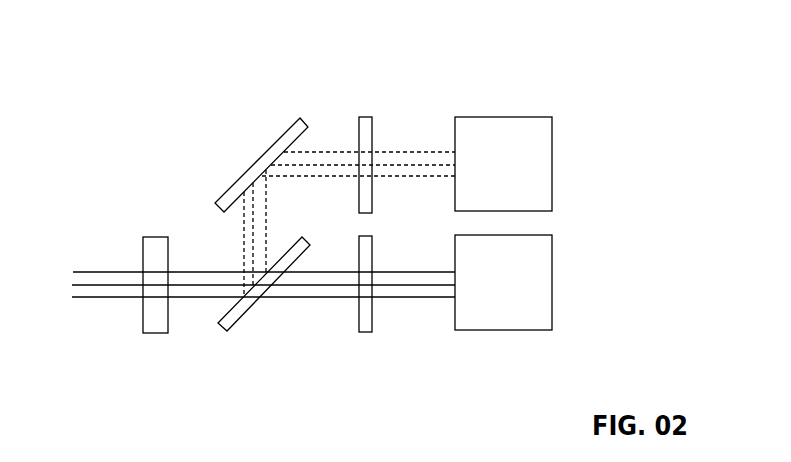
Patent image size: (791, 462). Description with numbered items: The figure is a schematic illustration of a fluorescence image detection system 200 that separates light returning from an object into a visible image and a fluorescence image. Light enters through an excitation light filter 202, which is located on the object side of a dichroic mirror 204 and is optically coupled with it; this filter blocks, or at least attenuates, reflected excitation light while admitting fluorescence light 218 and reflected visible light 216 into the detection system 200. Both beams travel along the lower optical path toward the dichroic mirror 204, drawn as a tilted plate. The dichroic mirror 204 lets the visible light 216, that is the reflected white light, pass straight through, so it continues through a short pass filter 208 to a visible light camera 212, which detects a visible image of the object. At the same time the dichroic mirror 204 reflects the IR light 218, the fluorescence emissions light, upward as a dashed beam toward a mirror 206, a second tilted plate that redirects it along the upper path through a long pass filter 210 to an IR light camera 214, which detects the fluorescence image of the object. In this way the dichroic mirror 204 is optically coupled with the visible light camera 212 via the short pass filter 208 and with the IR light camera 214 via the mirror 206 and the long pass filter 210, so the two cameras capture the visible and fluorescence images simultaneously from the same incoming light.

The fluorescence image detection system 200 is at (168, 118).
The excitation light filter 202 is at (153, 333).
The dichroic mirror 204 is at (240, 322).
The mirror 206 is at (275, 143).
The short pass filter 208 is at (367, 332).
The long pass filter 210 is at (362, 116).
The visible light camera 212 is at (552, 282).
The IR light camera 214 is at (552, 163).
The visible light 216 is at (408, 308).
The fluorescence light 218 is at (408, 138).